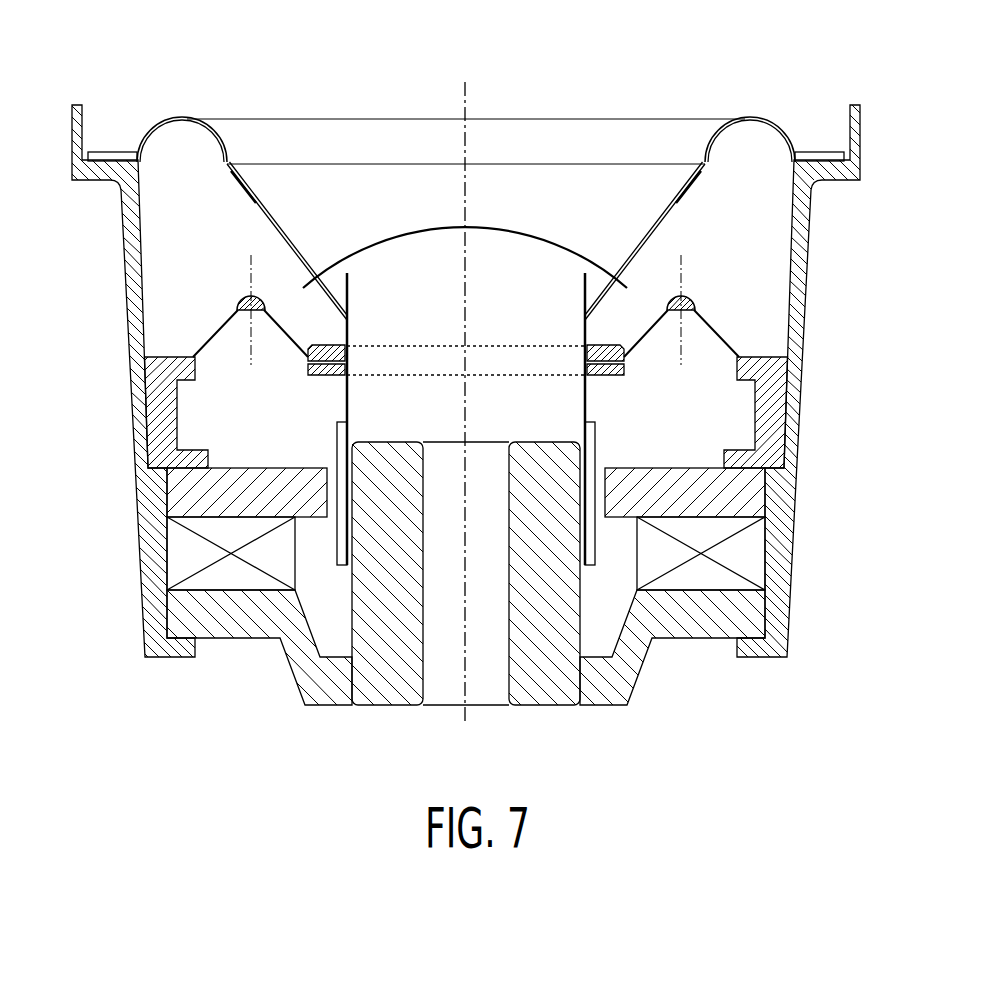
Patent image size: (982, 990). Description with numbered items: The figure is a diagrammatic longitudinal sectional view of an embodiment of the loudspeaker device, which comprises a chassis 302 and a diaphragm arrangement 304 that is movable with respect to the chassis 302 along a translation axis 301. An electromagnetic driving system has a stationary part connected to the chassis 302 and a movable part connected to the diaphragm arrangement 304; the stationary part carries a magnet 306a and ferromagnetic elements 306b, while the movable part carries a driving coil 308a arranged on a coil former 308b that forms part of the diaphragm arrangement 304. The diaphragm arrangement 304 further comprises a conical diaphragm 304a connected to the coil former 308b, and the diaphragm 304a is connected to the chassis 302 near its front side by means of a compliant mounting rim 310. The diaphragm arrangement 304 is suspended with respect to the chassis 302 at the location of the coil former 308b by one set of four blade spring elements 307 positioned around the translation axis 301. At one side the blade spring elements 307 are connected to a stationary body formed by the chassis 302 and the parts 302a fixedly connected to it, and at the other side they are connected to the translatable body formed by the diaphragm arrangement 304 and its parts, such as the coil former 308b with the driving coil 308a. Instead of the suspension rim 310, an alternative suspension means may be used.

The translation axis 301 is at (467, 92).
The compliant mounting rim 310 is at (748, 118).
The blade spring elements 307 is at (219, 303).
The diaphragm arrangement 304 is at (670, 240).
The diaphragm 304a is at (663, 219).
The coil former 308b is at (587, 400).
The driving coil 308a is at (595, 438).
The chassis 302 is at (795, 448).
The parts fixedly connected to the chassis 302a is at (780, 403).
The ferromagnetic elements 306b is at (753, 500).
The magnet 306a is at (753, 558).